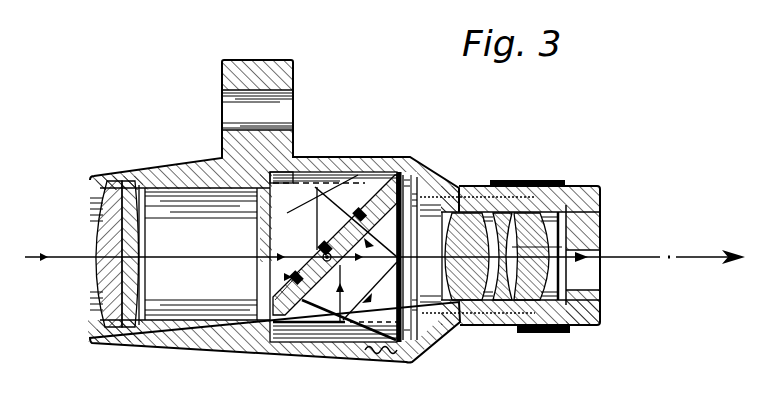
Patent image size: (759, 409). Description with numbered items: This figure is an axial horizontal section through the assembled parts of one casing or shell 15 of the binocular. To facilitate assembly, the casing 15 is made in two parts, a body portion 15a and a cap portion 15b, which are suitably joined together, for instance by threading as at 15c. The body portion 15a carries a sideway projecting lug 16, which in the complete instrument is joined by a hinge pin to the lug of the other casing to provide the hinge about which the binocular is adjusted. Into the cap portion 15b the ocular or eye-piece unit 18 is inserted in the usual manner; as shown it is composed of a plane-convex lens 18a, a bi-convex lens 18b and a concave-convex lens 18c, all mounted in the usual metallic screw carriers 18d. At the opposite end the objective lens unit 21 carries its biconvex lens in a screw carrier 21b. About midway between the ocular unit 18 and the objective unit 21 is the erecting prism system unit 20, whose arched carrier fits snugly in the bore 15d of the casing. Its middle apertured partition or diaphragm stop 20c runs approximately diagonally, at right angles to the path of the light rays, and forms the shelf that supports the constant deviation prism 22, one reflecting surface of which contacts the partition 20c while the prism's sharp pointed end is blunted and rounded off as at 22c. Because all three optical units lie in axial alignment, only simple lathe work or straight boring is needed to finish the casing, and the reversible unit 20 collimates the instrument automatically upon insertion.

The casing or shell 15 is at (350, 152).
The body portion 15a is at (189, 165).
The cap portion 15b is at (436, 170).
The threading 15c is at (375, 358).
The bore of the casing 15d is at (290, 185).
The sideway projecting lug 16 is at (294, 80).
The ocular or eye-piece unit 18 is at (538, 180).
The plane-convex lens 18a is at (593, 221).
The bi-convex lens 18b is at (594, 239).
The concave-convex lens 18c is at (477, 322).
The metallic screw carriers 18d is at (573, 324).
The erecting prism system unit 20 is at (290, 258).
The apertured partition or diaphragm stop 20c is at (286, 277).
The objective lens unit 21 is at (96, 297).
The screw carrier 21b is at (145, 317).
The constant deviation prism 22 is at (275, 232).
The blunted and rounded end 22c is at (400, 173).